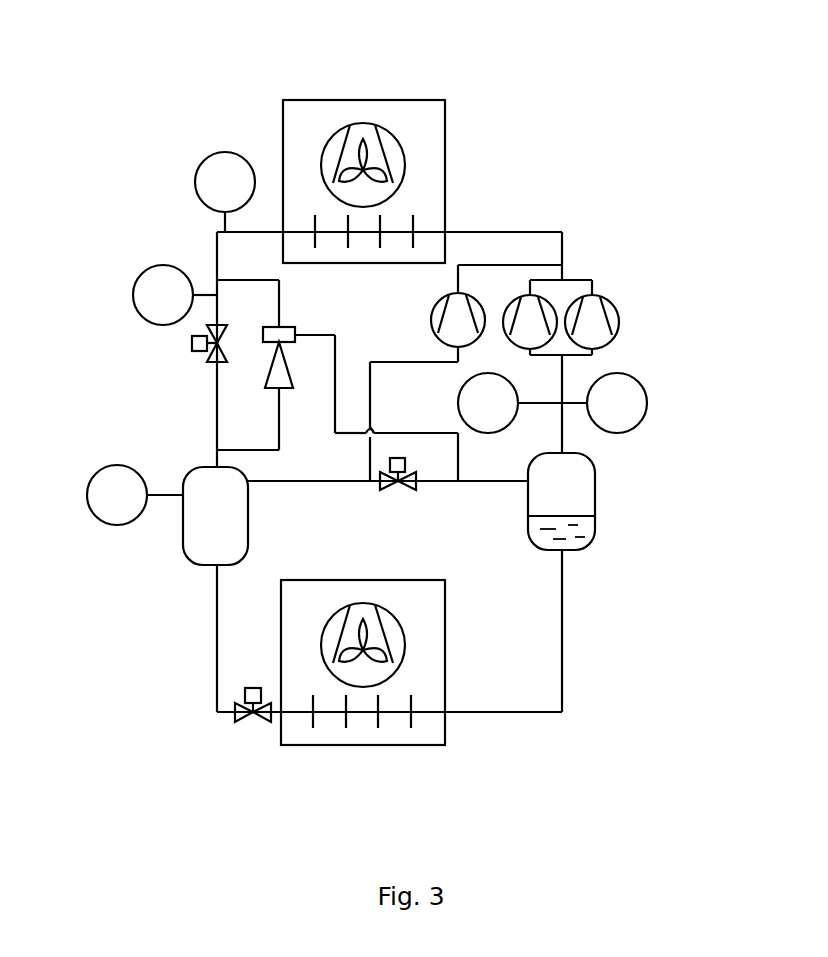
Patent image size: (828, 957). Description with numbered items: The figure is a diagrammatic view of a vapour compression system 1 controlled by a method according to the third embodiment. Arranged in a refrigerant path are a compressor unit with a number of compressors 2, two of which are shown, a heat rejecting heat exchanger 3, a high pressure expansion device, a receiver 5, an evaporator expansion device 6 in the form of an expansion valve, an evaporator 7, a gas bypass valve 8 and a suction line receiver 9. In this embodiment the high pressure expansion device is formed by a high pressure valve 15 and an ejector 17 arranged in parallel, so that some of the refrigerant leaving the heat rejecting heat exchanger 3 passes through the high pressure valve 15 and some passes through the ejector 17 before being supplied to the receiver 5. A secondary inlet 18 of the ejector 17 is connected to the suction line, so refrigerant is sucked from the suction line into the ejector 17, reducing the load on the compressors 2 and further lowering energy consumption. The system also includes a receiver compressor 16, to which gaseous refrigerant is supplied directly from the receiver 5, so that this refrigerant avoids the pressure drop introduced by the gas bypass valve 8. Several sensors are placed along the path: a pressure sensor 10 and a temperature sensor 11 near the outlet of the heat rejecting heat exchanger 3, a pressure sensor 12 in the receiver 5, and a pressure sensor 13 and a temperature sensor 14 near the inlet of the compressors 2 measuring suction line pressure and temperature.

The vapour compression system 1 is at (547, 97).
The compressors 2 is at (532, 310).
The heat rejecting heat exchanger 3 is at (375, 112).
The receiver 5 is at (203, 543).
The evaporator expansion device 6 is at (262, 718).
The evaporator 7 is at (373, 732).
The gas bypass valve 8 is at (407, 483).
The suction line receiver 9 is at (578, 492).
The pressure sensor 10 is at (213, 162).
The temperature sensor 11 is at (145, 285).
The pressure sensor 12 is at (110, 480).
The pressure sensor 13 is at (630, 397).
The temperature sensor 14 is at (489, 420).
The high pressure valve 15 is at (207, 360).
The receiver compressor 16 is at (455, 318).
The ejector 17 is at (275, 373).
The secondary inlet 18 is at (295, 333).